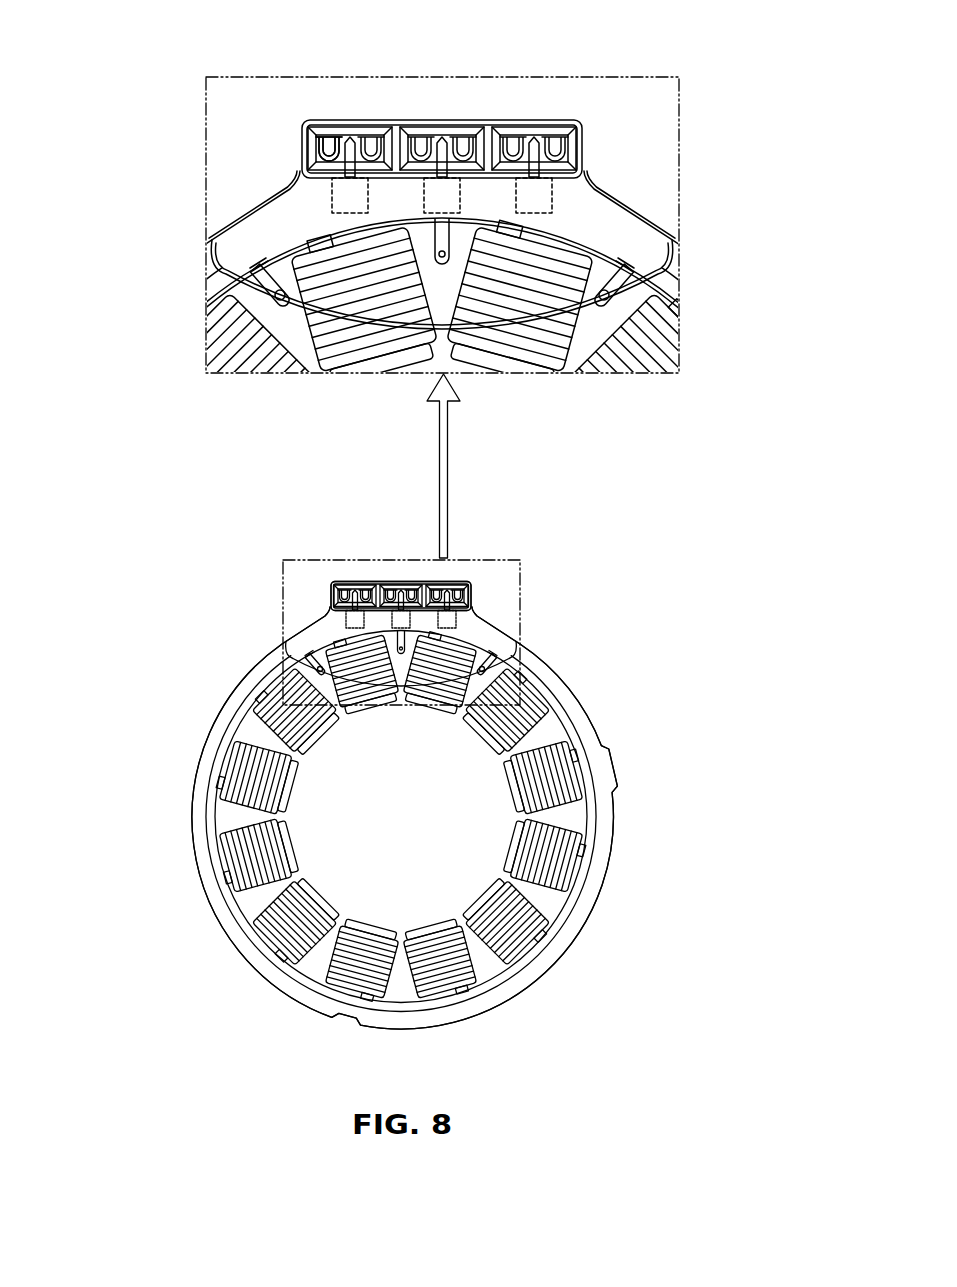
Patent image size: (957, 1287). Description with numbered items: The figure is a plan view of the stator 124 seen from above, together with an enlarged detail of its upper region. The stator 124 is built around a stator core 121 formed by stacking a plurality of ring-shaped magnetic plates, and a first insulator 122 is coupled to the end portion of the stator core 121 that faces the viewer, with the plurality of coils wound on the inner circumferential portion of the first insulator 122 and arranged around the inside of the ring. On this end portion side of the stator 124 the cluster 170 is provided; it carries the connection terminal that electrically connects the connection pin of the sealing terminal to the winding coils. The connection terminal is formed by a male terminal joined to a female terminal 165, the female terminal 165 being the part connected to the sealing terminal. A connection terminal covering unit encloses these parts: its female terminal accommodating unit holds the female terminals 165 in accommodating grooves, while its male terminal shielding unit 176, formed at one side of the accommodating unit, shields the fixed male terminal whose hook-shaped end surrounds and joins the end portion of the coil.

The stator core 121 is at (258, 965).
The first insulator 122 is at (241, 725).
The stator 124 is at (163, 805).
The female terminal 165 is at (331, 135).
The cluster 170 is at (343, 571).
The male terminal shielding unit 176 is at (248, 233).